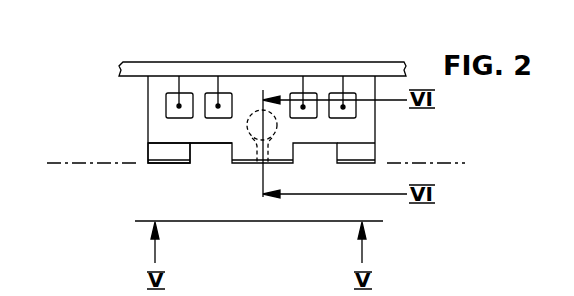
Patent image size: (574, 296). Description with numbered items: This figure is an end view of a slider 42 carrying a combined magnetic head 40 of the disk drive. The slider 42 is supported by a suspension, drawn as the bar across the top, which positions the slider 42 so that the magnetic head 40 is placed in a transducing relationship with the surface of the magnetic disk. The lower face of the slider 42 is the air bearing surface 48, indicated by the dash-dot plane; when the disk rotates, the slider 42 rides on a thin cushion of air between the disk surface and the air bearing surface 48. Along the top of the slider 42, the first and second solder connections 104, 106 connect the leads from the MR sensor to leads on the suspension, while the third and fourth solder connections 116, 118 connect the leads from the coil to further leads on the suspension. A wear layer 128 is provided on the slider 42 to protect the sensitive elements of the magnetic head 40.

The combined magnetic head 40 is at (248, 140).
The slider 42 is at (148, 106).
The air bearing surface 48 is at (70, 166).
The first solder connection 104 is at (166, 97).
The second solder connection 106 is at (330, 94).
The third solder connection 116 is at (206, 98).
The fourth solder connection 118 is at (290, 94).
The wear layer 128 is at (155, 165).